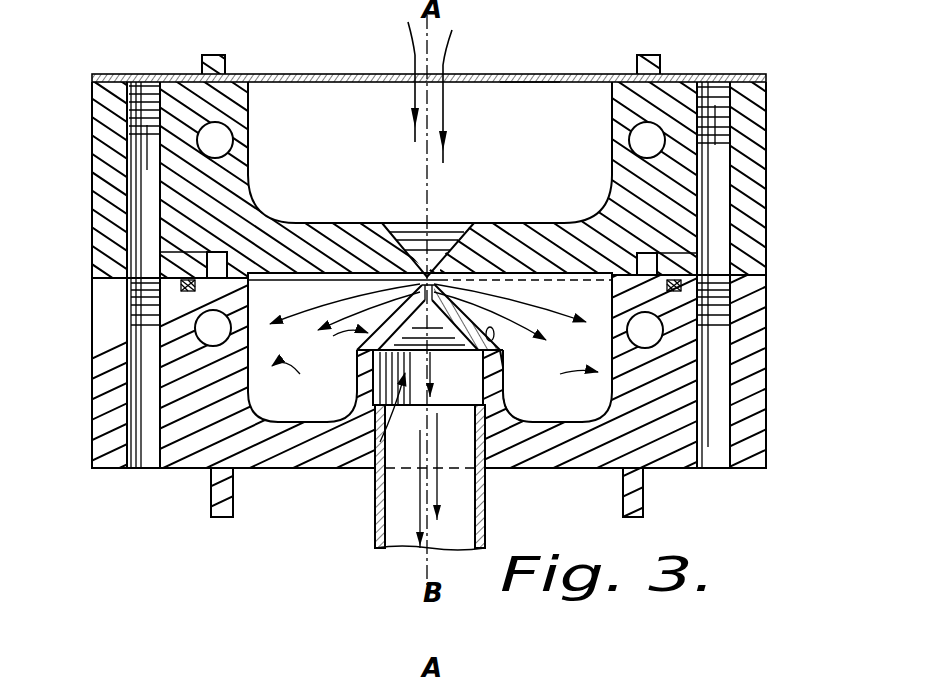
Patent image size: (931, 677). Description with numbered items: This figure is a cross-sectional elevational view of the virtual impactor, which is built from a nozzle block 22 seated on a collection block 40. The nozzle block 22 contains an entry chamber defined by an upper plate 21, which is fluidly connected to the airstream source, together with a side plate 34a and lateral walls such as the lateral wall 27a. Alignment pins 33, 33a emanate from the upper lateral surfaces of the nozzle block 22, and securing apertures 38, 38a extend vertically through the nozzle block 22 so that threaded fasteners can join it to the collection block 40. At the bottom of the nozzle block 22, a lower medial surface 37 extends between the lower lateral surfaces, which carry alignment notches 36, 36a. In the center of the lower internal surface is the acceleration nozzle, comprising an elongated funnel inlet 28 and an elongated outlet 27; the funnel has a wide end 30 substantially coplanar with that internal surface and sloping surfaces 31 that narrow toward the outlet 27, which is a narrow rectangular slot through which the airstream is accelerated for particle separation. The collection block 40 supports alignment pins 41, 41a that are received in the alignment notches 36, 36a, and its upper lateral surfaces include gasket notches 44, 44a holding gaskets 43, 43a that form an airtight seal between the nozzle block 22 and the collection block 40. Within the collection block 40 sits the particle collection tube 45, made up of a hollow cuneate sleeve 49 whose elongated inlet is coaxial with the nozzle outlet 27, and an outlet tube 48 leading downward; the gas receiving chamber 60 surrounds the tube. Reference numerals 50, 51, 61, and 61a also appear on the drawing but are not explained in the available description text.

The upper plate 21 is at (292, 78).
The nozzle block 22 is at (772, 150).
The elongated outlet 27 is at (243, 143).
The lateral wall 27a is at (606, 148).
The elongated funnel inlet 28 is at (462, 196).
The wide end 30 is at (405, 232).
The sloping surfaces 31 is at (487, 245).
The alignment pin 33 is at (220, 66).
The alignment pin 33a is at (648, 60).
The side plate 34a is at (507, 100).
The alignment notch 36 is at (200, 252).
The alignment notch 36a is at (680, 237).
The lower medial surface 37 is at (250, 327).
The securing aperture 38 is at (152, 82).
The securing aperture 38a is at (708, 82).
The collection block 40 is at (774, 350).
The alignment pin 41 is at (210, 272).
The alignment pin 41a is at (672, 270).
The gasket 43 is at (174, 300).
The gasket 43a is at (690, 290).
The gasket notch 44 is at (187, 288).
The gasket notch 44a is at (680, 298).
The particle collection tube 45 is at (494, 509).
The outlet tube 48 is at (375, 528).
The hollow cuneate sleeve 49 is at (372, 340).
The valve stem 50 is at (373, 468).
The conical valve member 51 is at (488, 366).
The gas receiving chamber 60 is at (573, 407).
The lower chamber 61 is at (337, 347).
The lower chamber 61a is at (580, 364).